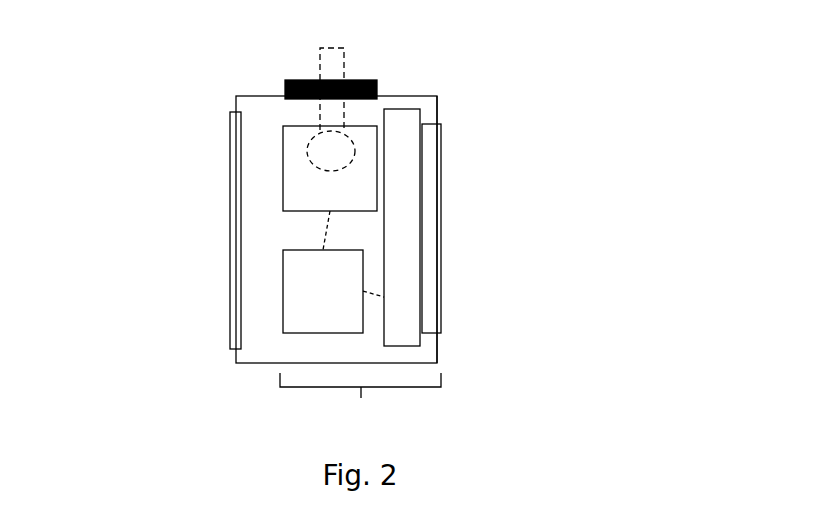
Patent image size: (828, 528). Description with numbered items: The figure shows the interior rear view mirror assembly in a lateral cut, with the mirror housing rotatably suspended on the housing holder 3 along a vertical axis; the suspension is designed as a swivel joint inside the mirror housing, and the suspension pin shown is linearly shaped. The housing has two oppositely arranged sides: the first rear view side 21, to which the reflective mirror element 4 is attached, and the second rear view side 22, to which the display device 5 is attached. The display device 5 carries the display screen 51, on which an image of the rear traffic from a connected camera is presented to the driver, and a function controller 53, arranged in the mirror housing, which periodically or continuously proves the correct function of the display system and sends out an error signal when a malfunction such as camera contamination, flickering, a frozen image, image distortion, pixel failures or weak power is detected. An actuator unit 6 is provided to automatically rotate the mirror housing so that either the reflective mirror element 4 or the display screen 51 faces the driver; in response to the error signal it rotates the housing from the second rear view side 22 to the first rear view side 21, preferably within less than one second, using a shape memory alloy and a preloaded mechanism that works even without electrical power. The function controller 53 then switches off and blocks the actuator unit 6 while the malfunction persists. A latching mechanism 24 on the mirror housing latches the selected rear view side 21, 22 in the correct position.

The housing holder 3 is at (319, 53).
The reflective mirror element 4 is at (229, 225).
The display device 5 is at (360, 402).
The actuator unit 6 is at (281, 170).
The first rear view side 21 is at (233, 102).
The second rear view side 22 is at (438, 107).
The latching mechanism 24 is at (378, 90).
The display screen 51 is at (439, 236).
The function controller 53 is at (323, 291).